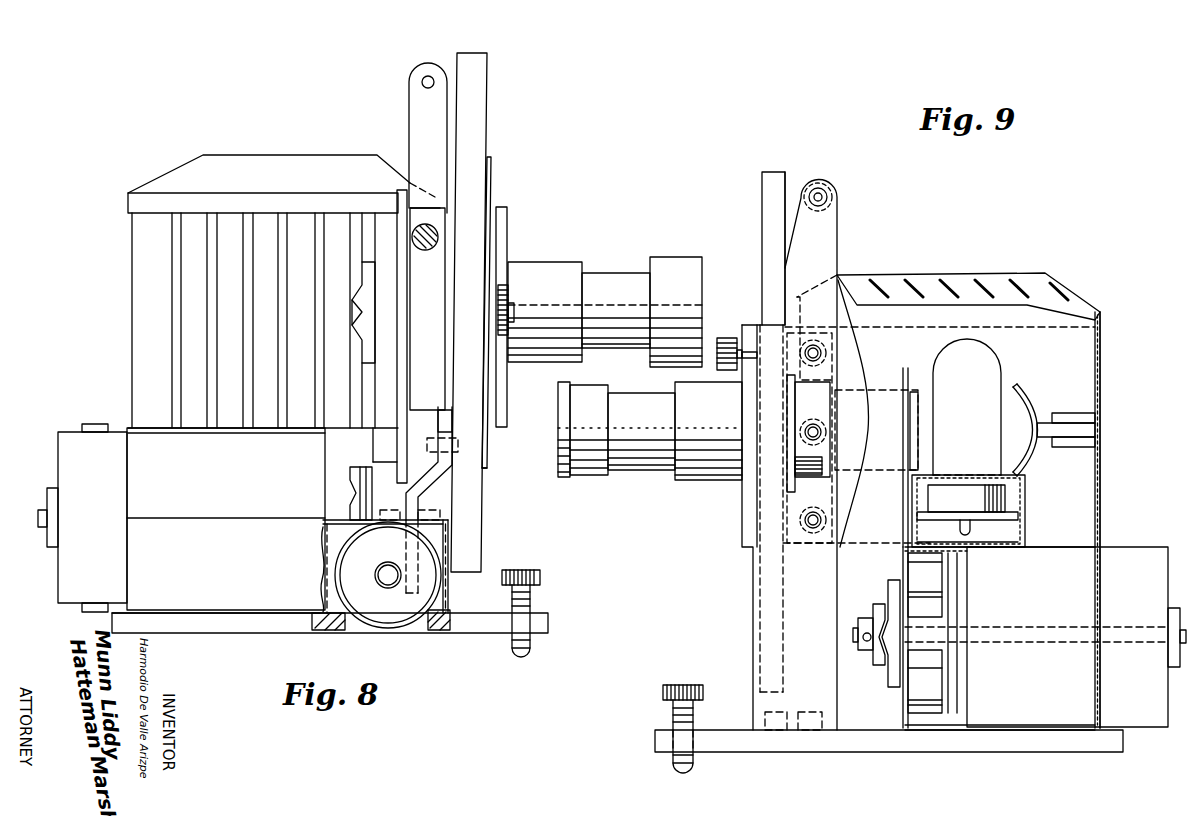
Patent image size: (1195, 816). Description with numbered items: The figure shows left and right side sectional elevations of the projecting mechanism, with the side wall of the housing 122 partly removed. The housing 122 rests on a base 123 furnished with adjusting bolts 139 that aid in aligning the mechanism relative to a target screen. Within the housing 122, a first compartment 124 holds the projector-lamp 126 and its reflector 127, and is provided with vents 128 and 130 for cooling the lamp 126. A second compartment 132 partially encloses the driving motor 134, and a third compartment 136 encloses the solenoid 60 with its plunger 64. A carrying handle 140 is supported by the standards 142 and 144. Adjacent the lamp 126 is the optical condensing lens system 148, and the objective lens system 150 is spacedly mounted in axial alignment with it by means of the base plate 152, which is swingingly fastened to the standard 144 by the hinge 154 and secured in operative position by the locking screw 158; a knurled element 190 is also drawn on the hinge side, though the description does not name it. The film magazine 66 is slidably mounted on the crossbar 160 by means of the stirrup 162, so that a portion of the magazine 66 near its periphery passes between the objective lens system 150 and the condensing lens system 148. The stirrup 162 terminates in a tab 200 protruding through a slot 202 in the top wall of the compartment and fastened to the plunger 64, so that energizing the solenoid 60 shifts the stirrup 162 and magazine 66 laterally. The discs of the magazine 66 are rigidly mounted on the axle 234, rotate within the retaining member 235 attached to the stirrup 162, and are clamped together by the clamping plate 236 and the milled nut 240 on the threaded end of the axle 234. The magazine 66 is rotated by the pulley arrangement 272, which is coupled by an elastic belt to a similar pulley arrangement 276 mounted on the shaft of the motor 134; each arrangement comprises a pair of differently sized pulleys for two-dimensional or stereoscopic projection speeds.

In FIG. 8, the solenoid 60 is at (380, 635).
In FIG. 8, the plunger 64 is at (390, 585).
In FIG. 8, the film magazine 66 is at (486, 62).
In FIG. 9, the film magazine 66 is at (770, 170).
In FIG. 8, the housing 122 is at (130, 378).
In FIG. 9, the housing 122 is at (1072, 292).
In FIG. 8, the base 123 is at (550, 625).
In FIG. 9, the base 123 is at (1070, 748).
In FIG. 8, the first compartment 124 is at (140, 248).
In FIG. 9, the first compartment 124 is at (1102, 408).
In FIG. 9, the projector-lamp 126 is at (978, 379).
In FIG. 9, the reflector 127 is at (1030, 402).
In FIG. 9, the vent 128 is at (948, 276).
In FIG. 8, the vent 130 is at (178, 318).
In FIG. 9, the second compartment 132 is at (1100, 578).
In FIG. 8, the driving motor 134 is at (70, 578).
In FIG. 9, the driving motor 134 is at (1056, 605).
In FIG. 8, the third compartment 136 is at (282, 605).
In FIG. 8, the adjusting bolts 139 is at (540, 572).
In FIG. 9, the adjusting bolts 139 is at (680, 685).
In FIG. 8, the carrying handle 140 is at (420, 87).
In FIG. 9, the carrying handle 140 is at (840, 212).
In FIG. 8, the standard 142 is at (415, 118).
In FIG. 9, the standard 144 is at (828, 248).
In FIG. 9, the condensing lens system 148 is at (873, 398).
In FIG. 8, the objective lens system 150 is at (607, 273).
In FIG. 9, the objective lens system 150 is at (652, 470).
In FIG. 8, the base plate 152 is at (506, 238).
In FIG. 9, the hinge 154 is at (745, 535).
In FIG. 9, the locking screw 158 is at (728, 338).
In FIG. 8, the crossbar 160 is at (425, 250).
In FIG. 8, the stirrup 162 is at (438, 390).
In FIG. 9, the knurled knob 190 is at (795, 465).
In FIG. 8, the tab 200 is at (410, 508).
In FIG. 8, the slot 202 is at (448, 522).
In FIG. 8, the axle 234 is at (516, 316).
In FIG. 8, the retaining member 235 is at (483, 92).
In FIG. 9, the retaining member 235 is at (786, 182).
In FIG. 8, the clamping plate 236 is at (490, 447).
In FIG. 8, the milled nut 240 is at (506, 298).
In FIG. 8, the pulley arrangement 272 is at (362, 322).
In FIG. 8, the pulley arrangement 276 is at (360, 476).
In FIG. 9, the pulley arrangement 276 is at (885, 668).